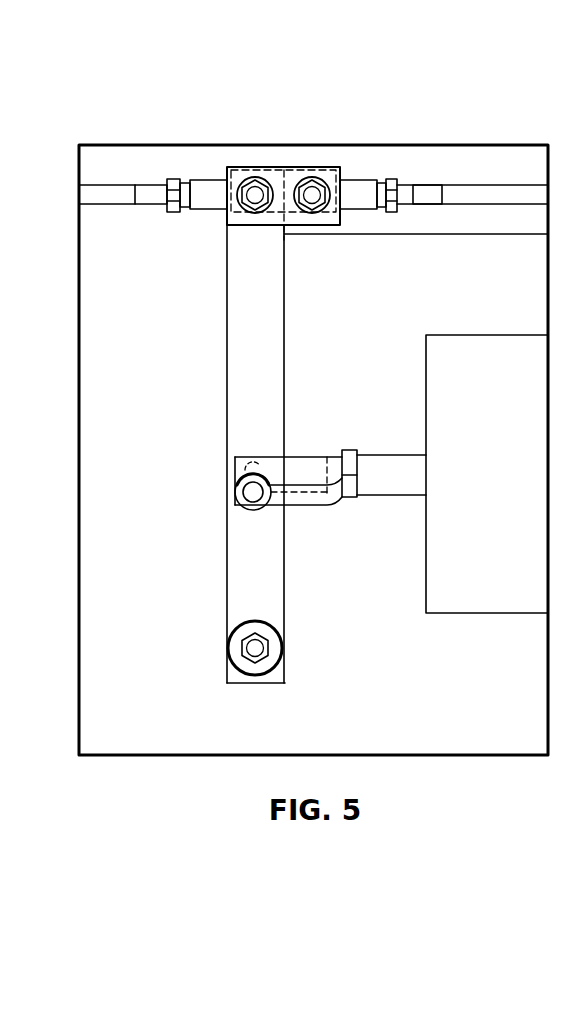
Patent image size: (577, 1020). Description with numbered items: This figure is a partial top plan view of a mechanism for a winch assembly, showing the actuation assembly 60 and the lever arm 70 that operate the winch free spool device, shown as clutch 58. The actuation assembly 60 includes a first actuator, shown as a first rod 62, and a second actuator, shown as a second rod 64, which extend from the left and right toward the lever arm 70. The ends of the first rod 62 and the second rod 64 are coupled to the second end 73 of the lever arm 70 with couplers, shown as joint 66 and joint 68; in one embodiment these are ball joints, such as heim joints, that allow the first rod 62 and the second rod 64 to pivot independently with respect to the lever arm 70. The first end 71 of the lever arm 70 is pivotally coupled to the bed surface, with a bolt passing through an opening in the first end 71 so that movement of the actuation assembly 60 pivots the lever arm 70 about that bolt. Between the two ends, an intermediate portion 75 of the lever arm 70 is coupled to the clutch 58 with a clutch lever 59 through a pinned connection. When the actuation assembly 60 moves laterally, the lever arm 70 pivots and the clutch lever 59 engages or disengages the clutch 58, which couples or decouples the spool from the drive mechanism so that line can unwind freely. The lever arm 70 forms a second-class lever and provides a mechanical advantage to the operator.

The actuation assembly 60 is at (368, 79).
The first rod 62 is at (102, 192).
The second rod 64 is at (487, 193).
The joint 66 is at (208, 188).
The joint 68 is at (348, 186).
The second end 73 is at (305, 170).
The lever arm 70 is at (250, 348).
The first end 71 is at (250, 681).
The intermediate portion 75 is at (235, 498).
The clutch lever 59 is at (413, 458).
The clutch 58 is at (453, 600).